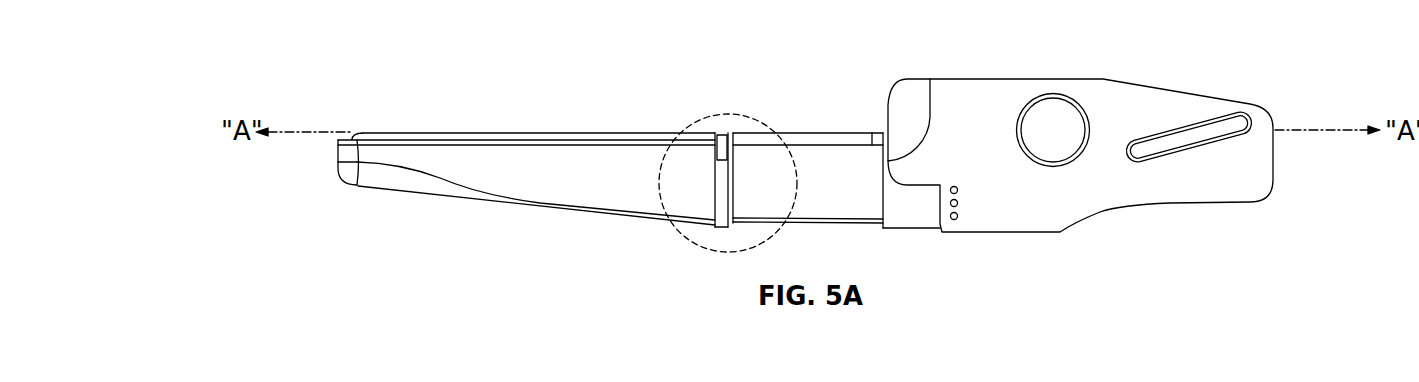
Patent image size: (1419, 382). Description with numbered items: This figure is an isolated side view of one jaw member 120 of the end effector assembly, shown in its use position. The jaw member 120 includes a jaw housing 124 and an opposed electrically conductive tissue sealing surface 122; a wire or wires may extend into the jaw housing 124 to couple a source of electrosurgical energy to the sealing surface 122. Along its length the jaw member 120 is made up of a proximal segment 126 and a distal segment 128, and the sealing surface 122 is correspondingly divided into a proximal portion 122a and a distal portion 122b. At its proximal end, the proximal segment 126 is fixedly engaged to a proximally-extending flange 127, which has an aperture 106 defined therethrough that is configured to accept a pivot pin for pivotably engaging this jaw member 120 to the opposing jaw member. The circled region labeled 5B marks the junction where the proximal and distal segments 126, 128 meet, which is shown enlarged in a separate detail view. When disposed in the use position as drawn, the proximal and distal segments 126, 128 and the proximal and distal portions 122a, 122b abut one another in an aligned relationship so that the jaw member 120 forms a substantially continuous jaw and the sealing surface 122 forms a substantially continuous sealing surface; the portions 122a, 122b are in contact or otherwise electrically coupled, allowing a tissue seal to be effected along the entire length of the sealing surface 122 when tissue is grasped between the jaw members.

The jaw member 120 is at (805, 132).
The electrically conductive tissue sealing surface 122 is at (526, 92).
The proximal portion of sealing surface 122a is at (860, 137).
The distal portion of sealing surface 122b is at (561, 137).
The jaw housing 124 is at (522, 170).
The proximal segment 126 is at (836, 135).
The flange 127 is at (1000, 95).
The distal segment 128 is at (466, 165).
The aperture 106 is at (1064, 115).
The detail area 5B is at (728, 113).